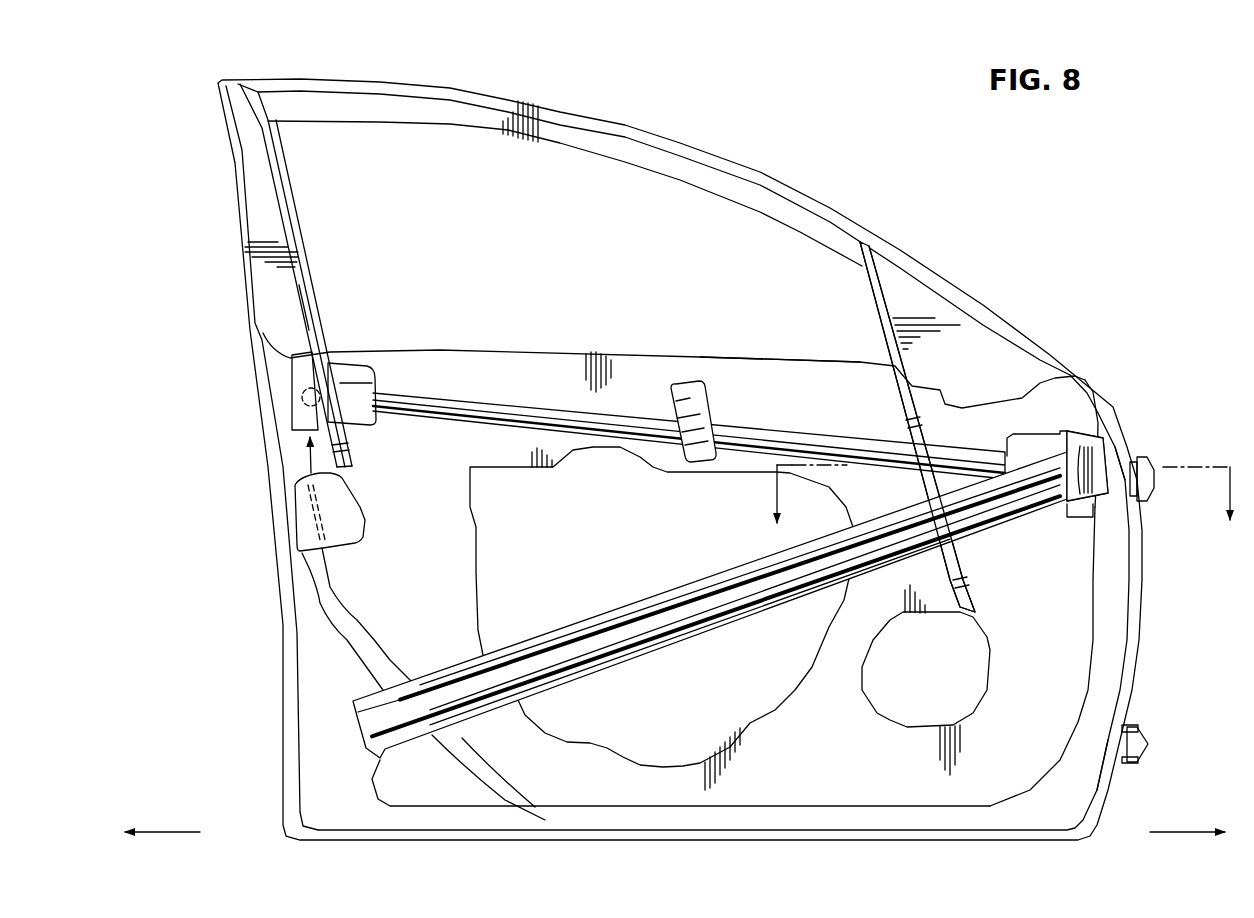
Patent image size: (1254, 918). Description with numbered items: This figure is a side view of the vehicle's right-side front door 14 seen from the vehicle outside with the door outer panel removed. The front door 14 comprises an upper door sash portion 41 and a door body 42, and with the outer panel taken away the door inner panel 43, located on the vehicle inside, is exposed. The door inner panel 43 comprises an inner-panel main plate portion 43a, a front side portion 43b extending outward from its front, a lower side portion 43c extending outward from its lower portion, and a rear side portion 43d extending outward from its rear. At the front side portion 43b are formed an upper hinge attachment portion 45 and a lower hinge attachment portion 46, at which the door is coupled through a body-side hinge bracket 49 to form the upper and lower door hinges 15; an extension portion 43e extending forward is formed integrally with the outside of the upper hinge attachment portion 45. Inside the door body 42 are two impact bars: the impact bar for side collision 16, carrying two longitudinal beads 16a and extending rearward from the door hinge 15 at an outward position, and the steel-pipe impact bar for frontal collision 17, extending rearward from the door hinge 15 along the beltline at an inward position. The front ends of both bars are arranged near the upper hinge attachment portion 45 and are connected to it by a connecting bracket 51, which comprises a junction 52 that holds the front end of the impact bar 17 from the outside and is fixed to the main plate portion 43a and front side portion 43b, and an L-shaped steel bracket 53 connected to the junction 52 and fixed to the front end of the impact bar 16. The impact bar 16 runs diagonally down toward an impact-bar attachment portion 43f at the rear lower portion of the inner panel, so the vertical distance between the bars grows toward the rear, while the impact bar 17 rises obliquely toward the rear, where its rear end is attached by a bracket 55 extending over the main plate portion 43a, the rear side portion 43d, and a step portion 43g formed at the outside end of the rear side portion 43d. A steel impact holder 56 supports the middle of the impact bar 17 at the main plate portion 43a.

The front door 14 is at (1133, 312).
The door hinge 15 is at (1150, 455).
The impact bar for side collision 16 is at (730, 594).
The bead 16a is at (631, 650).
The impact bar for frontal collision 17 is at (607, 432).
The door sash portion 41 is at (594, 112).
The door body 42 is at (278, 638).
The door inner panel 43 is at (513, 343).
The inner-panel main plate portion 43a is at (779, 366).
The front side portion 43b is at (1092, 593).
The lower side portion 43c is at (787, 805).
The rear side portion 43d is at (333, 580).
The extension portion 43e is at (1100, 428).
The impact-bar attachment portion 43f is at (350, 730).
The step portion 43g is at (300, 437).
The upper hinge attachment portion 45 is at (1110, 503).
The lower hinge attachment portion 46 is at (1090, 732).
The body-side hinge bracket 49 is at (1135, 456).
The connecting bracket 51 is at (1097, 270).
The junction 52 is at (1023, 433).
The bracket 53 is at (1080, 427).
The bracket 55 is at (355, 362).
The impact holder 56 is at (677, 384).